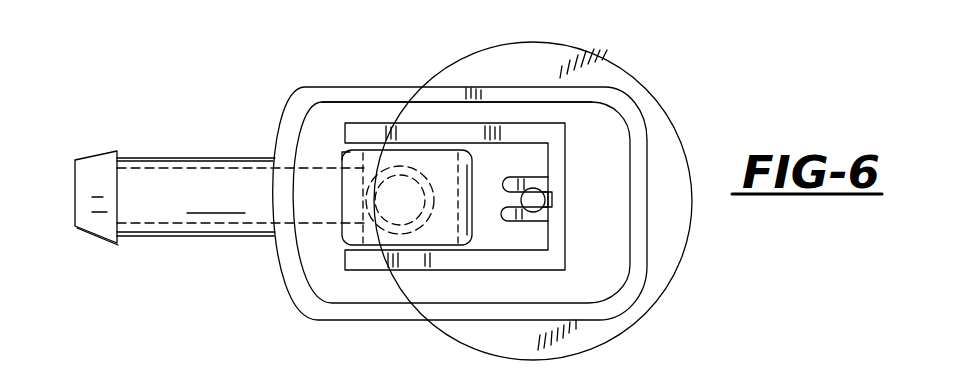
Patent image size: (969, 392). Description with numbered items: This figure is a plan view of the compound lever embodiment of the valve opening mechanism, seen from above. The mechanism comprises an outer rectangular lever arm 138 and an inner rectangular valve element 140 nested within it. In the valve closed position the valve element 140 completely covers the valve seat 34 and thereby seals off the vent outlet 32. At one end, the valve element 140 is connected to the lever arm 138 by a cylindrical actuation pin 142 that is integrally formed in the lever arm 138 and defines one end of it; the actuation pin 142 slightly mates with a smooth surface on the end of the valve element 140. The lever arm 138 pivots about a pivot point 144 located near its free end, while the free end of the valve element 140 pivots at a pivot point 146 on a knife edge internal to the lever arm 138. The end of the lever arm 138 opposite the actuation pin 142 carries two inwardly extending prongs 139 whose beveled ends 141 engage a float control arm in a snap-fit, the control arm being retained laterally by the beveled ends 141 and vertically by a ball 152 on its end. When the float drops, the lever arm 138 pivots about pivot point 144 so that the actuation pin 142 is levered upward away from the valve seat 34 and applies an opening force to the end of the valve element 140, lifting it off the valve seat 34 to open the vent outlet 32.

The vent outlet 32 is at (373, 208).
The valve seat 34 is at (366, 198).
The lever arm 138 is at (408, 268).
The prongs 139 is at (518, 185).
The valve element 140 is at (374, 157).
The beveled ends 141 is at (500, 204).
The actuation pin 142 is at (343, 153).
The pivot point 144 is at (396, 135).
The pivot point 146 is at (482, 115).
The ball 152 is at (545, 200).